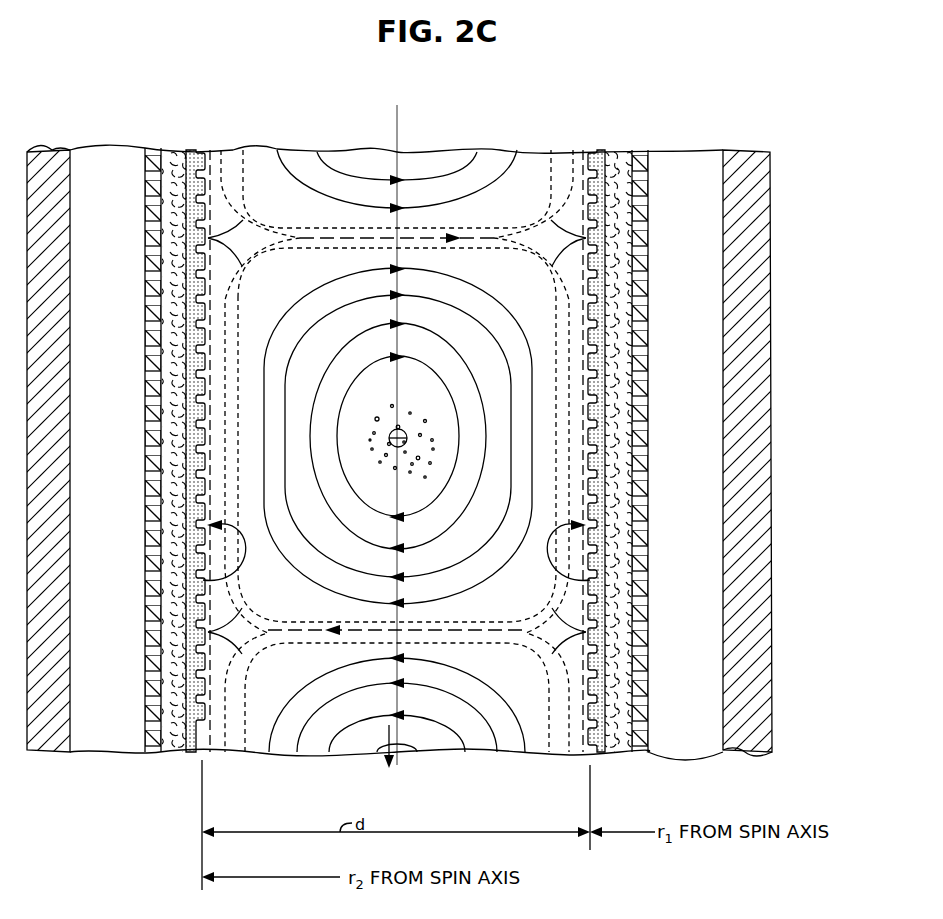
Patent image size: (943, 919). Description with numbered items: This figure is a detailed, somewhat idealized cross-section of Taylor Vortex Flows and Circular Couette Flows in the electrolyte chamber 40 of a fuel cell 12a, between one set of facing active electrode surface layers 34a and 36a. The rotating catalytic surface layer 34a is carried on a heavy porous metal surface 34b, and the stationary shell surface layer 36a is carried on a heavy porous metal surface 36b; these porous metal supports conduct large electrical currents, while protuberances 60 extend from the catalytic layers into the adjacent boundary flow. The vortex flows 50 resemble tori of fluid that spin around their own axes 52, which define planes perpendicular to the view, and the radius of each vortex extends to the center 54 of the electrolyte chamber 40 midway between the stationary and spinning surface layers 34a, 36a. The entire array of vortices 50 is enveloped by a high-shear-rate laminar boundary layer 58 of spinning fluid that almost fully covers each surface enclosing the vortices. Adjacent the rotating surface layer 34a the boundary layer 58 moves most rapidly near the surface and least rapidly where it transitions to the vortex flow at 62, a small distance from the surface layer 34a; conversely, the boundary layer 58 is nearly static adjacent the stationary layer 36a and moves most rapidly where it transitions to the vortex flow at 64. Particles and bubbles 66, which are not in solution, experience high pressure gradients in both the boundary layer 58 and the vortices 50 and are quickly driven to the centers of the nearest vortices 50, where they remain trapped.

The fuel cell 12a is at (297, 122).
The center of electrolyte chamber 54 is at (396, 117).
The vortex flows 50 is at (478, 203).
The high-shear-rate laminar boundary layer 58 is at (585, 140).
The transition of CCF to TVF near stationary layer 64 is at (212, 242).
The transition of CCF to TVF near rotating layer 62 is at (600, 242).
The particles and bubbles 66 is at (425, 465).
The spin axis of vortex 52 is at (388, 436).
The electrolyte chamber 40 is at (352, 727).
The stationary shell surface layer 36a is at (203, 718).
The heavy porous metal surface 36b is at (176, 755).
The rotating catalytic surface layer 34a is at (588, 678).
The heavy porous metal surface 34b is at (620, 760).
The protuberances 60 is at (207, 703).